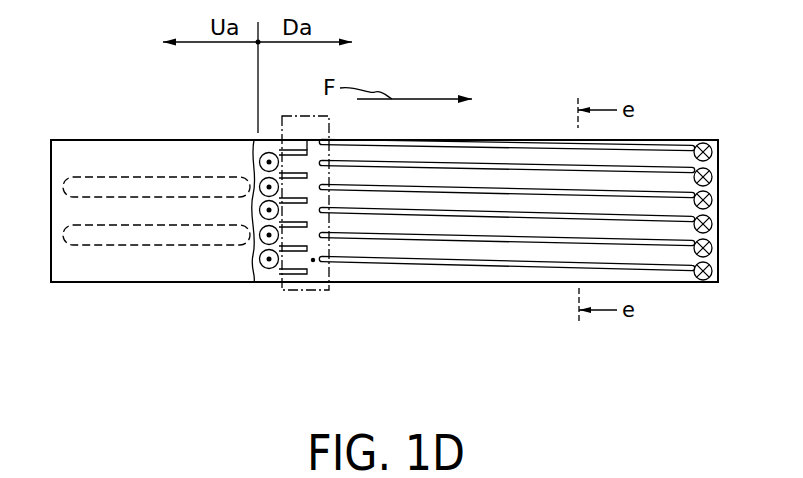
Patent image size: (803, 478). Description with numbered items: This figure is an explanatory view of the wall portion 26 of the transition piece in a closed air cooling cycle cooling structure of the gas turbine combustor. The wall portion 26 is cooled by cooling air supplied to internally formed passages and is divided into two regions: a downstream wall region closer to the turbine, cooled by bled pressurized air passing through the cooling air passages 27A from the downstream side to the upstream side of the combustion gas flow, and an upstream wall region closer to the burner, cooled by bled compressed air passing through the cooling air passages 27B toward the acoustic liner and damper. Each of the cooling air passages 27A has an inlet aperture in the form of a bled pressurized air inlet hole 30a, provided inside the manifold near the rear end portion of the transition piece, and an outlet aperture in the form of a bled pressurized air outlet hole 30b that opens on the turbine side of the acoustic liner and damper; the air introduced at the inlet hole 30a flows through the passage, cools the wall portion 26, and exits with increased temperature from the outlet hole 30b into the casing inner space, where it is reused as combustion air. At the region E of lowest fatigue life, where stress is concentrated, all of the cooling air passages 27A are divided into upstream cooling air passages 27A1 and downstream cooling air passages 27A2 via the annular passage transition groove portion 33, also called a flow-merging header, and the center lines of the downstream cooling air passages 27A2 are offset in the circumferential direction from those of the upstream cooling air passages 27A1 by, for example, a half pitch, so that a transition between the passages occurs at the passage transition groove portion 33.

The wall portion 26 is at (672, 139).
The cooling air passages 27A is at (437, 176).
The upstream cooling air passages 27A1 is at (538, 178).
The downstream cooling air passages 27A2 is at (295, 187).
The cooling air passages 27B is at (117, 205).
The bled pressurized air inlet hole 30a is at (692, 152).
The bled pressurized air outlet hole 30b is at (258, 190).
The passage transition groove portion 33 is at (313, 262).
The region of lowest fatigue life E is at (316, 300).